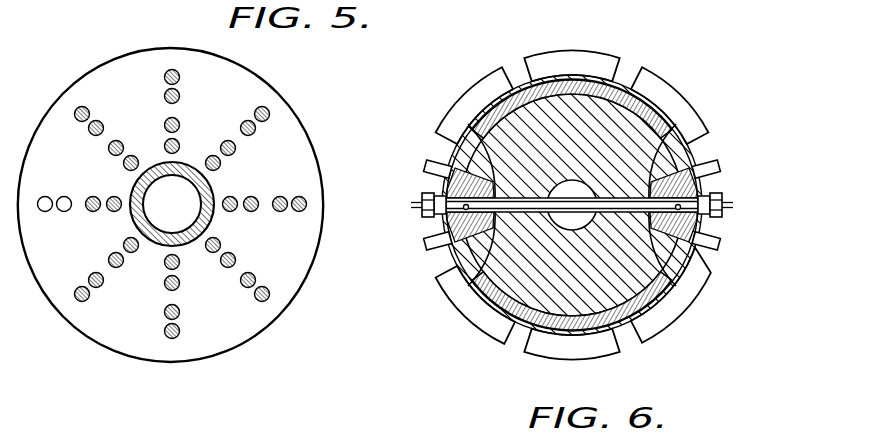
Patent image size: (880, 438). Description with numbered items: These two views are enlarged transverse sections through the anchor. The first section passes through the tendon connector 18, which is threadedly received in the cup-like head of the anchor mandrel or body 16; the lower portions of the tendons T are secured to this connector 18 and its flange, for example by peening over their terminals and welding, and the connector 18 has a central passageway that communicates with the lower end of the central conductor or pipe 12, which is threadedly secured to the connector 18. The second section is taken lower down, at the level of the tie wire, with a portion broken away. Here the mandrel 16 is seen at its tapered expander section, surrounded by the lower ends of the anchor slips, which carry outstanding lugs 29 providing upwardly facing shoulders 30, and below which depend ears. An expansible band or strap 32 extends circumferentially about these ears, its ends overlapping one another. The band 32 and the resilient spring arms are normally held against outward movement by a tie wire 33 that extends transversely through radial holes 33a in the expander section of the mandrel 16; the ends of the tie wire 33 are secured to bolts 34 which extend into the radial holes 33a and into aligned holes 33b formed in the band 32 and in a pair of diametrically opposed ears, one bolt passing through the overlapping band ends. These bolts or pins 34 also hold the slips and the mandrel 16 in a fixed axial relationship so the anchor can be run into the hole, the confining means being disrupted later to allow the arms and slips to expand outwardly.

In FIG. 5, the tendon connector 18 is at (110, 70).
In FIG. 5, the central conductor or pipe 12 is at (138, 188).
In FIG. 5, the tendons T is at (92, 362).
In FIG. 6, the anchor mandrel or body 16 is at (653, 277).
In FIG. 6, the lugs 29 is at (472, 92).
In FIG. 6, the shoulders 30 is at (665, 88).
In FIG. 6, the expansible band or strap 32 is at (616, 80).
In FIG. 6, the tie wire 33 is at (562, 199).
In FIG. 6, the radial holes 33a is at (658, 123).
In FIG. 6, the aligned holes 33b is at (706, 222).
In FIG. 6, the bolts or pins 34 is at (724, 204).